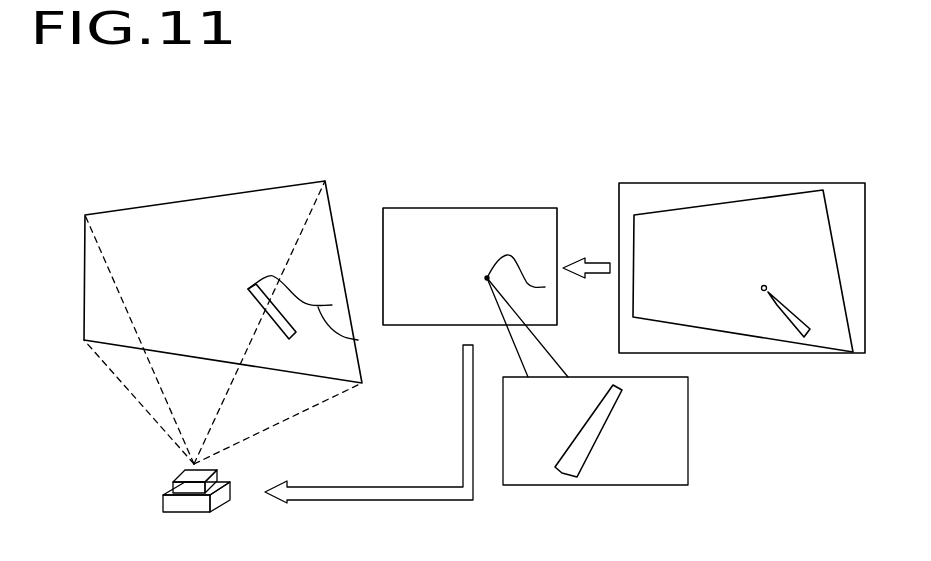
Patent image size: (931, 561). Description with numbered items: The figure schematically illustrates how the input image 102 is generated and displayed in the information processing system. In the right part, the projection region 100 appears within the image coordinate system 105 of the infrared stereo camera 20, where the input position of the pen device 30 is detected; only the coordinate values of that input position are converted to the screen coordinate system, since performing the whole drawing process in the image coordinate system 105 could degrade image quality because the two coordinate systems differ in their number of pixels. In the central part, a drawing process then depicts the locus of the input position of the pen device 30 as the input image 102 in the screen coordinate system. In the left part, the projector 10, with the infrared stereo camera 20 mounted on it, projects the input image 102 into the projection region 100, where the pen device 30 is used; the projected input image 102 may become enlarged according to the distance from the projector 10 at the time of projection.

The projector 10 is at (163, 501).
The infrared stereo camera 20 is at (173, 482).
The pen device 30 is at (280, 329).
The projection region 100 is at (207, 196).
The input image 102 is at (358, 340).
The image coordinate system 105 is at (843, 183).